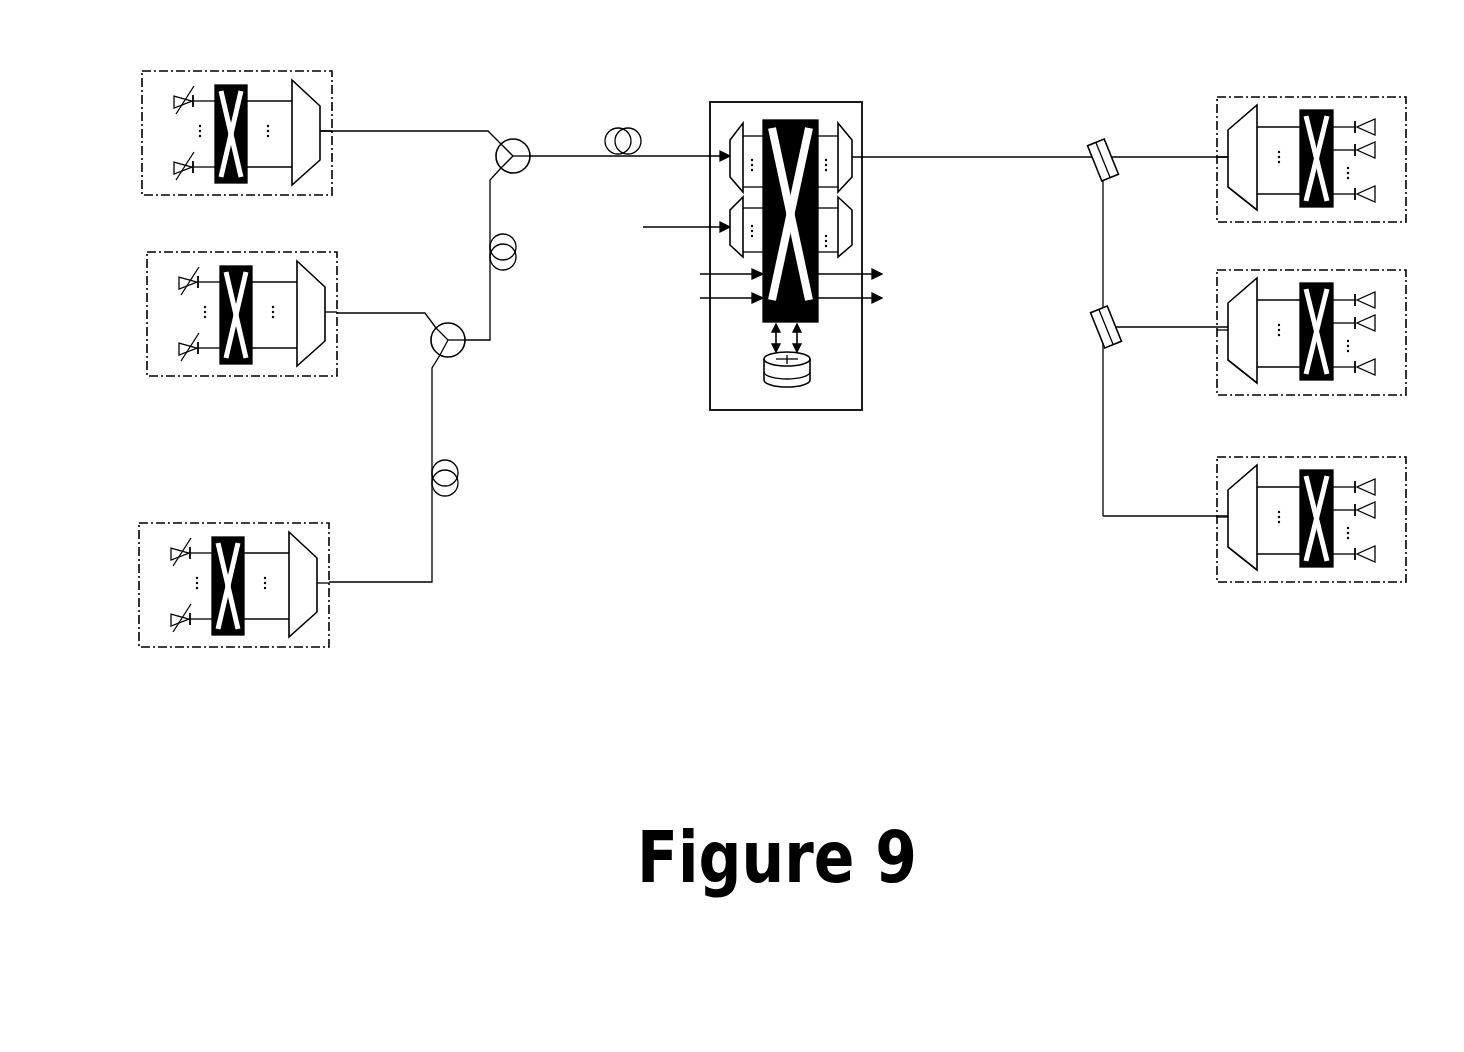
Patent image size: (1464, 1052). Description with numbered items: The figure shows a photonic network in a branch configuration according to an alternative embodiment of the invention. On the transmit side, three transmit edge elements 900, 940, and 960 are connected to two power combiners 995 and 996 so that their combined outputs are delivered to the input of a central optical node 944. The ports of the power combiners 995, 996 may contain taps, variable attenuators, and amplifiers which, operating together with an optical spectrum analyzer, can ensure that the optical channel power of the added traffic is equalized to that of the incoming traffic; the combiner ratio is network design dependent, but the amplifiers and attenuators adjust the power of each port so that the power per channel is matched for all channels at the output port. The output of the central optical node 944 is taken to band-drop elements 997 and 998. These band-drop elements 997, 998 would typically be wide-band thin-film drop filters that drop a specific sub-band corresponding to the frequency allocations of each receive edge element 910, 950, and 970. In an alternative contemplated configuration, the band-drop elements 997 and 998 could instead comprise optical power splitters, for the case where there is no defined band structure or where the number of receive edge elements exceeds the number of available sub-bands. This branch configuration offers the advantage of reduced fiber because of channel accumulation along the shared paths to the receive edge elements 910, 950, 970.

The transmit edge element 900 is at (210, 71).
The transmit edge element 940 is at (198, 252).
The transmit edge element 960 is at (198, 523).
The power combiner 995 is at (513, 139).
The power combiner 996 is at (450, 358).
The central optical node 944 is at (805, 102).
The band-drop element 997 is at (1098, 140).
The band-drop element 998 is at (1092, 310).
The receive edge element 910 is at (1333, 97).
The receive edge element 950 is at (1343, 270).
The receive edge element 970 is at (1325, 457).